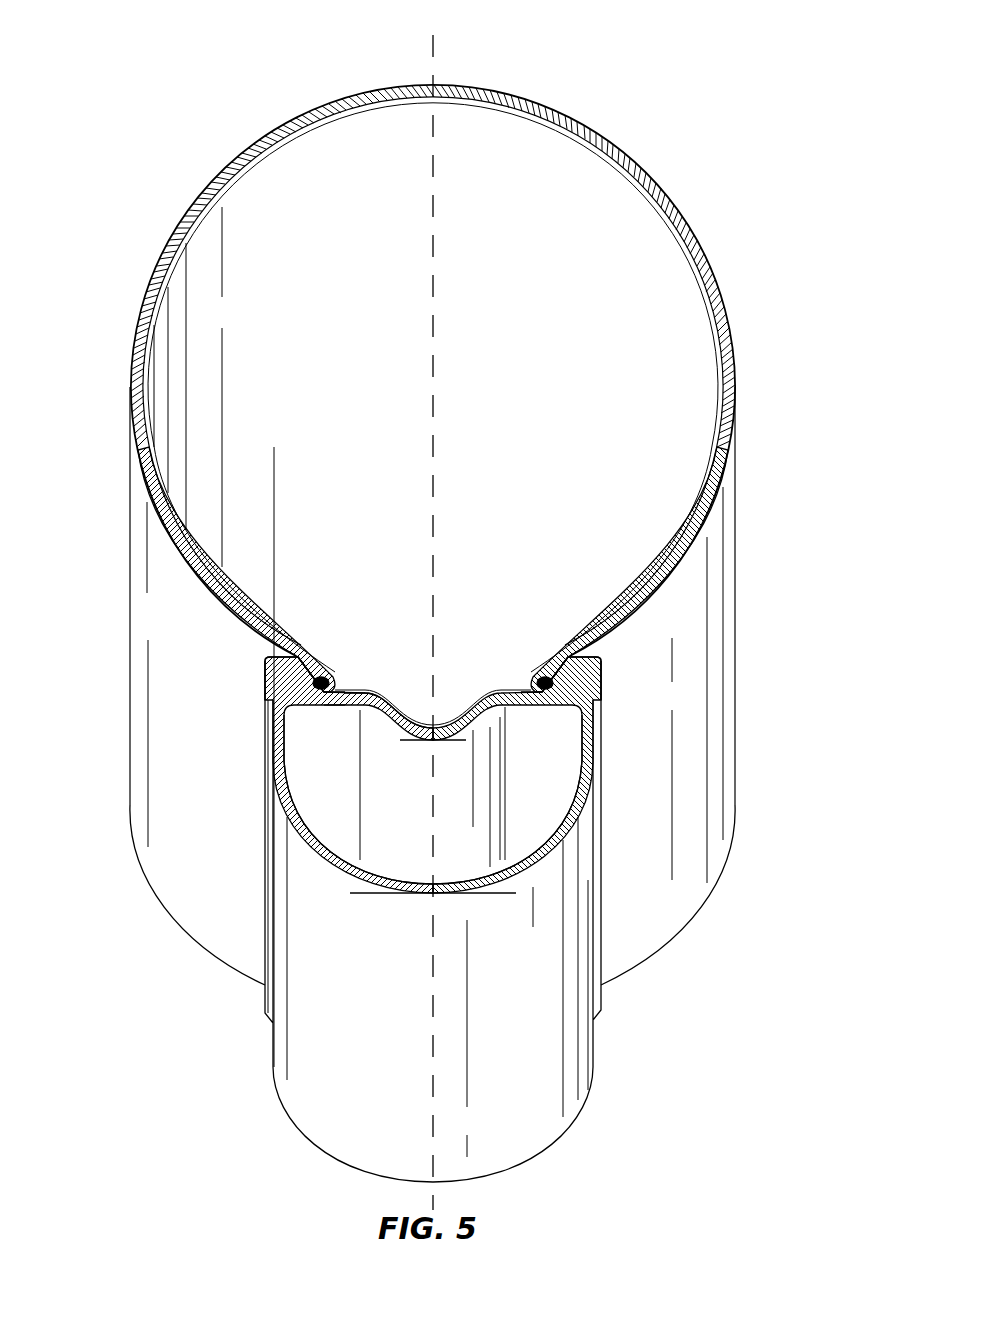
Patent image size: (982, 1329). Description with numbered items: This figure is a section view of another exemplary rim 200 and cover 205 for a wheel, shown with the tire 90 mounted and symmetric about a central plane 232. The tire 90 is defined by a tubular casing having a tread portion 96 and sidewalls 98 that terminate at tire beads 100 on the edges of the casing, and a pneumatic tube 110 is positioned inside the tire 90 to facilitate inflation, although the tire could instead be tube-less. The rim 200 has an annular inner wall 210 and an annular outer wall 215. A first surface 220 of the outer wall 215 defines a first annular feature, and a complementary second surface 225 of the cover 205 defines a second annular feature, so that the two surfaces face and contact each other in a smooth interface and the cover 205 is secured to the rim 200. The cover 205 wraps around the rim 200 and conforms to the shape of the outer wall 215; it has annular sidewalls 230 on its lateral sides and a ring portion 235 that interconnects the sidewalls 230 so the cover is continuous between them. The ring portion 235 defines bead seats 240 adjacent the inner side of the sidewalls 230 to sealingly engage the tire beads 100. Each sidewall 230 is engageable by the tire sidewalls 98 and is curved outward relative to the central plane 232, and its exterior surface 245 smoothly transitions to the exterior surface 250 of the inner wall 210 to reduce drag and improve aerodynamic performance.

The tire 90 is at (578, 127).
The tread portion 96 is at (499, 96).
The sidewalls 98 is at (655, 680).
The tire beads 100 is at (328, 683).
The pneumatic tube 110 is at (658, 568).
The rim 200 is at (580, 1110).
The cover 205 is at (267, 663).
The annular inner wall 210 is at (375, 880).
The annular outer wall 215 is at (350, 708).
The first surface 220 is at (350, 682).
The second surface 225 is at (318, 706).
The annular sidewalls 230 is at (265, 690).
The central plane 232 is at (437, 42).
The ring portion 235 is at (465, 735).
The bead seats 240 is at (347, 672).
The exterior surface 245 is at (270, 717).
The exterior surface 250 is at (277, 833).